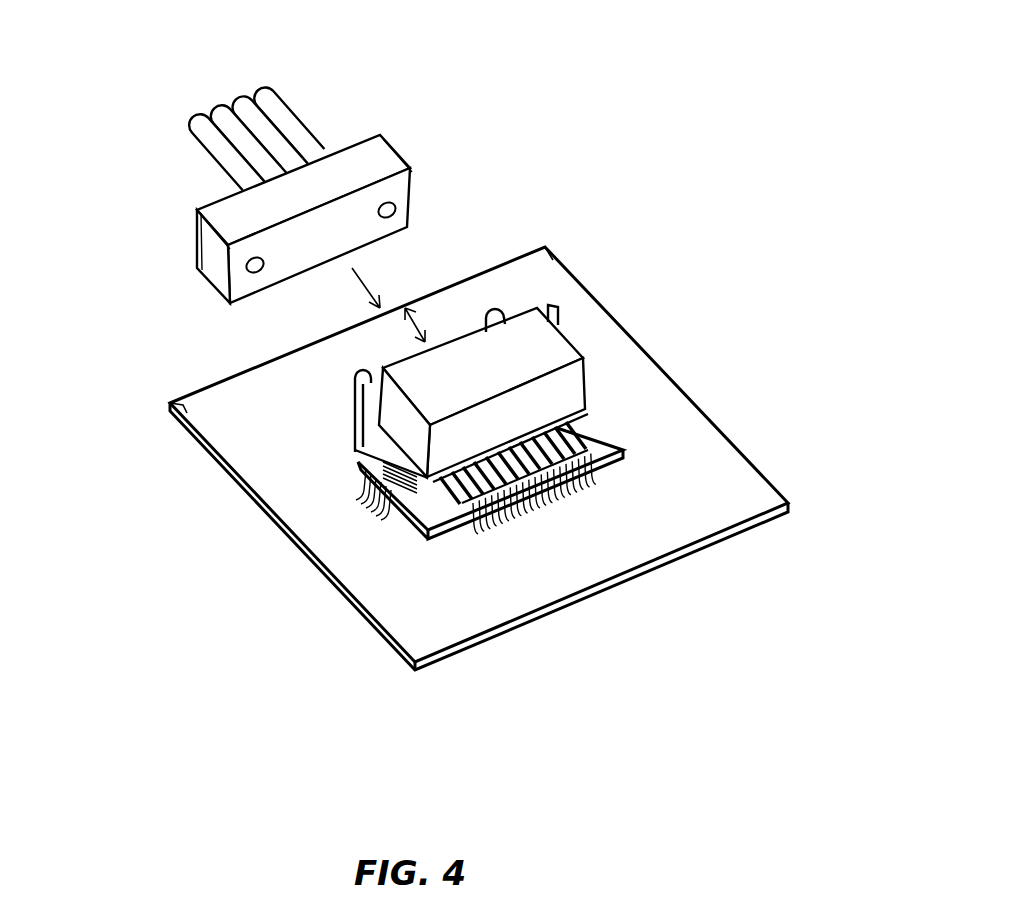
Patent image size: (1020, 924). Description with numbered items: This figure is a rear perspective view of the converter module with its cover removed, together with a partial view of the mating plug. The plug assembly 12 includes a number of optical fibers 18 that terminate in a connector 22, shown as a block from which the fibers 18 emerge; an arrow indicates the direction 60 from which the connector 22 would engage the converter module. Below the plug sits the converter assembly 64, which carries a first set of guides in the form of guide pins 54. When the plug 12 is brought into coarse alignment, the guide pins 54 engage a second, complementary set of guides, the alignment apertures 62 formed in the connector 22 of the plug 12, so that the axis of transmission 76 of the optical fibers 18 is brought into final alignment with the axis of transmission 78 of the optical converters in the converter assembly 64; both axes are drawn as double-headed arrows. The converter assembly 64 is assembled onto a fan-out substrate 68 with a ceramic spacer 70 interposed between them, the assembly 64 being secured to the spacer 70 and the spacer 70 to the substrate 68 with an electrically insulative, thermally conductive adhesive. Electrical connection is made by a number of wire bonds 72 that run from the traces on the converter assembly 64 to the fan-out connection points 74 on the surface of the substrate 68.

The plug assembly 12 is at (254, 205).
The optical fibers 18 is at (320, 114).
The connector 22 is at (194, 235).
The guide pins 54 is at (493, 310).
The direction 60 is at (352, 280).
The alignment apertures 62 is at (389, 200).
The converter assembly 64 is at (606, 345).
The fan-out substrate 68 is at (722, 426).
The ceramic spacer 70 is at (447, 537).
The wire bonds 72 is at (598, 483).
The fan-out connection points 74 is at (590, 553).
The axis of transmission 76 is at (312, 240).
The axis of transmission 78 is at (424, 325).